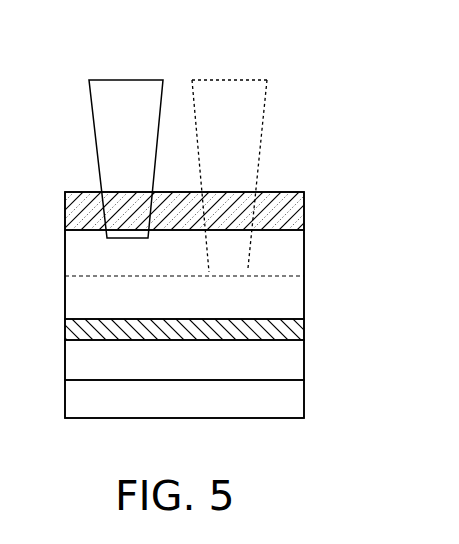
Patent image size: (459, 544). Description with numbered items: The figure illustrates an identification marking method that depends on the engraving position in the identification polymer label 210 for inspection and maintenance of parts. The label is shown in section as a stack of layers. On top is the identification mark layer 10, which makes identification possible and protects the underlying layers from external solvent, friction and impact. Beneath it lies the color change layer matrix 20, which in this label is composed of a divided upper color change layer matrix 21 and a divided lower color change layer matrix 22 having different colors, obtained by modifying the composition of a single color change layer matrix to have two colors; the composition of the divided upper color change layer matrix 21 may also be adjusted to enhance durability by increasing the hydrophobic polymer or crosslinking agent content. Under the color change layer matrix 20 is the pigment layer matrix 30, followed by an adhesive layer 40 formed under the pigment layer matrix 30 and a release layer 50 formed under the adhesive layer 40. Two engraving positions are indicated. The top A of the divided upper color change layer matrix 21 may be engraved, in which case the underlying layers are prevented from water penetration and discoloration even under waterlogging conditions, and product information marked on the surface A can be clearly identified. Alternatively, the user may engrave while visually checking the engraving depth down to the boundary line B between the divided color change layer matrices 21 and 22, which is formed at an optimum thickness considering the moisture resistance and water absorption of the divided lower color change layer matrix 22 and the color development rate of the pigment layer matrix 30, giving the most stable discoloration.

The identification polymer label 210 is at (313, 169).
The identification mark layer 10 is at (304, 212).
The color change layer matrix 20 is at (230, 274).
The divided upper color change layer matrix 21 is at (304, 254).
The divided lower color change layer matrix 22 is at (304, 291).
The pigment layer matrix 30 is at (304, 332).
The adhesive layer 40 is at (304, 360).
The release layer 50 is at (304, 398).
The top of the divided upper color change layer matrix A is at (125, 80).
The boundary line B is at (232, 80).